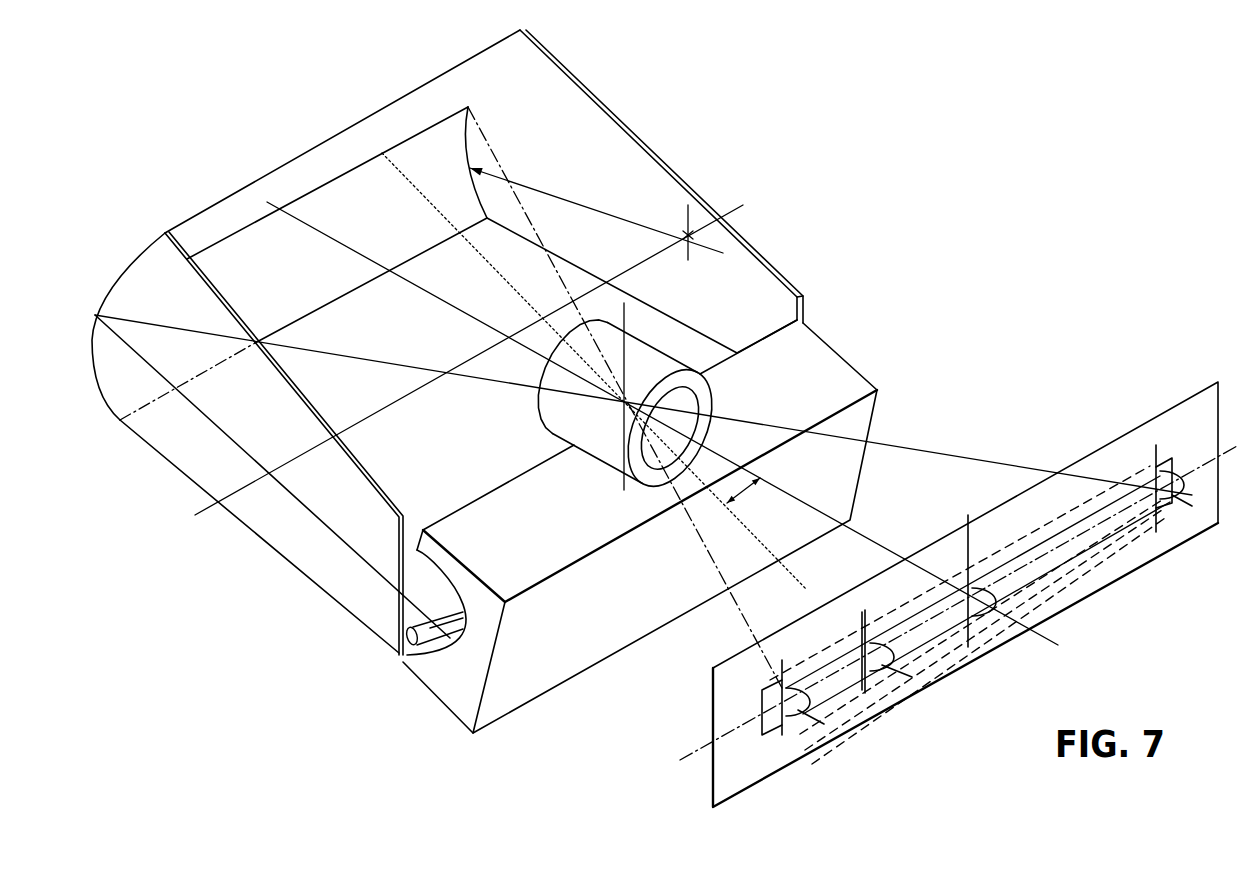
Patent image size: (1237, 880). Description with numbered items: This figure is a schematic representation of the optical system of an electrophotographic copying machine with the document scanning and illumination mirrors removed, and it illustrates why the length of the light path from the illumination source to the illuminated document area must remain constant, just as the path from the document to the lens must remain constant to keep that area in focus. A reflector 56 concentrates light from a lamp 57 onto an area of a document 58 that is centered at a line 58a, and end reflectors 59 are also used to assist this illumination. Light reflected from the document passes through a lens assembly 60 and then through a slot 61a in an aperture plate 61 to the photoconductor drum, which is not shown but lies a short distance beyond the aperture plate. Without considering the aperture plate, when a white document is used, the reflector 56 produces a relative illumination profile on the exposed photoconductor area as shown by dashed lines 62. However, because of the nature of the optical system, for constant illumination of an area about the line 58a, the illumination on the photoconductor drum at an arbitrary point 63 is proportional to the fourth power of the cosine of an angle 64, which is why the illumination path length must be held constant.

The reflector 56 is at (447, 703).
The lamp 57 is at (446, 612).
The document 58 is at (334, 138).
The line 58a is at (233, 239).
The end reflectors 59 is at (656, 153).
The lens assembly 60 is at (542, 430).
The aperture plate 61 is at (1170, 409).
The slot 61a is at (1050, 537).
The dashed lines 62 is at (880, 643).
The arbitrary point 63 is at (873, 670).
The angle 64 is at (743, 491).